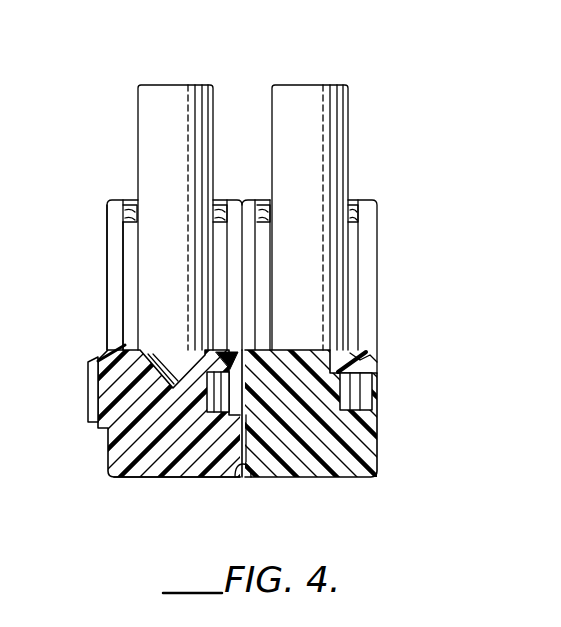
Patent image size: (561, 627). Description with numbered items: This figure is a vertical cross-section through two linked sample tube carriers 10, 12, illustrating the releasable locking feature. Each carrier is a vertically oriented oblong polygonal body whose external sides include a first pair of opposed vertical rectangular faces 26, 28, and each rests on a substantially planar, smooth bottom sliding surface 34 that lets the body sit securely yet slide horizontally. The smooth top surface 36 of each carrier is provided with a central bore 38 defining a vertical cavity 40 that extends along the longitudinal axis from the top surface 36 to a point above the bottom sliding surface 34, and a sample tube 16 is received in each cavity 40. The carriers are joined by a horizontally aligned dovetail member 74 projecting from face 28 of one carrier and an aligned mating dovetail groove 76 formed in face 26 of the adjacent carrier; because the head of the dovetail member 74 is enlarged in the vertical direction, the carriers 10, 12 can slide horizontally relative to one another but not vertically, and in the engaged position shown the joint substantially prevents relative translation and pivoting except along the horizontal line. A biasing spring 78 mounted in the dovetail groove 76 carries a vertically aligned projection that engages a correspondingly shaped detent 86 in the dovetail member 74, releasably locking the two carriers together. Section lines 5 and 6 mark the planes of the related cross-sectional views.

The section line 5- 5 is at (176, 56).
The section line 6- 6 is at (56, 389).
The sample tube carrier 10 is at (92, 232).
The sample tube carrier 12 is at (398, 238).
The sample tube 16 is at (141, 120).
The vertical rectangular face 26 is at (248, 478).
The vertical rectangular face 28 is at (107, 462).
The bottom sliding surface 34 is at (122, 478).
The top surface 36 is at (232, 205).
The central bore 38 is at (122, 205).
The vertical cavity 40 is at (127, 288).
The dovetail member 74 is at (88, 420).
The dovetail groove 76 is at (390, 437).
The biasing spring 78 is at (231, 402).
The detent 86 is at (88, 362).